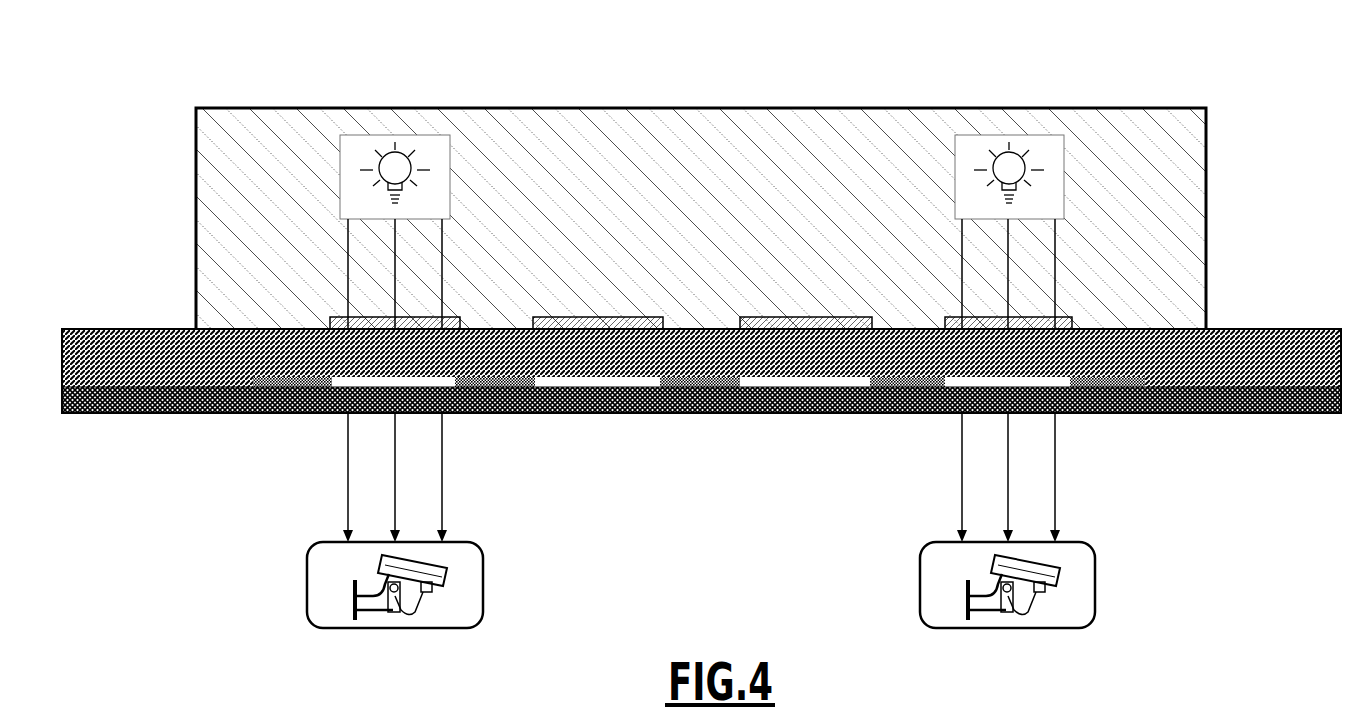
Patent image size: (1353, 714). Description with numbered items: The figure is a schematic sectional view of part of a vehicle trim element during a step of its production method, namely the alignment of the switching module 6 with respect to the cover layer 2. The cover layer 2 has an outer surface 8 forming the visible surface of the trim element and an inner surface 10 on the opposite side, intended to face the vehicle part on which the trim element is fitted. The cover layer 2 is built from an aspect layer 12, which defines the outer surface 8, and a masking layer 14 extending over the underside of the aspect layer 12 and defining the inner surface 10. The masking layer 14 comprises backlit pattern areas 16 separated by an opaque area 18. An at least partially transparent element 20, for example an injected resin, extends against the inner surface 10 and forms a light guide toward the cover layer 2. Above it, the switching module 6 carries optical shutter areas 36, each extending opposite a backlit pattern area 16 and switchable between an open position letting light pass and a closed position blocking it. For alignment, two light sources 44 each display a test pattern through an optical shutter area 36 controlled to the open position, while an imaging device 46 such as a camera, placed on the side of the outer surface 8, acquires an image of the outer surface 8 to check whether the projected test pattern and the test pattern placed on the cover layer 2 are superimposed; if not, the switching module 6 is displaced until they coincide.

The cover layer 2 is at (701, 367).
The switching module 6 is at (705, 160).
The outer surface 8 is at (695, 413).
The inner surface 10 is at (845, 413).
The aspect layer 12 is at (1168, 413).
The masking layer 14 is at (1135, 328).
The backlit pattern areas 16 is at (596, 413).
The opaque area 18 is at (265, 413).
The at least partially transparent element 20 is at (1290, 340).
The optical shutter areas 36 is at (790, 317).
The light source 44 is at (436, 152).
The imaging device 46 is at (415, 602).